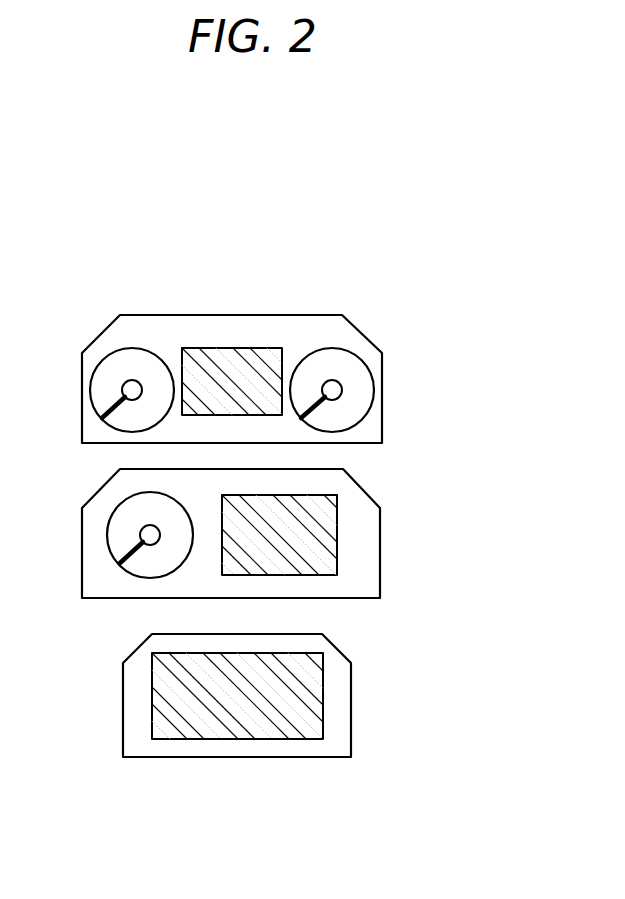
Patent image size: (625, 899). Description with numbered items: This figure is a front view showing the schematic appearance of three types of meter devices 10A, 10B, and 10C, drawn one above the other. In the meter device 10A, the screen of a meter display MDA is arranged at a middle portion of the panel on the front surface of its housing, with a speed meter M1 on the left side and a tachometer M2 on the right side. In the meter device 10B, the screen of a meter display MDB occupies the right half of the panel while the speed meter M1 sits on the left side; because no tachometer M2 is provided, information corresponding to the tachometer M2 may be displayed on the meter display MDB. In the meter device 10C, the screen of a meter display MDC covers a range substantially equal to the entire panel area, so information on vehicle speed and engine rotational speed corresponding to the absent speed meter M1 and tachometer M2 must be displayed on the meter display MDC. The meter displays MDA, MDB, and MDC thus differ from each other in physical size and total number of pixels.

The meter device 10A is at (372, 336).
The meter device 10B is at (373, 496).
The meter device 10C is at (355, 684).
The speed meter M1 is at (118, 347).
The tachometer M2 is at (318, 347).
The meter display MDA is at (225, 347).
The meter display MDB is at (337, 540).
The meter display MDC is at (323, 718).